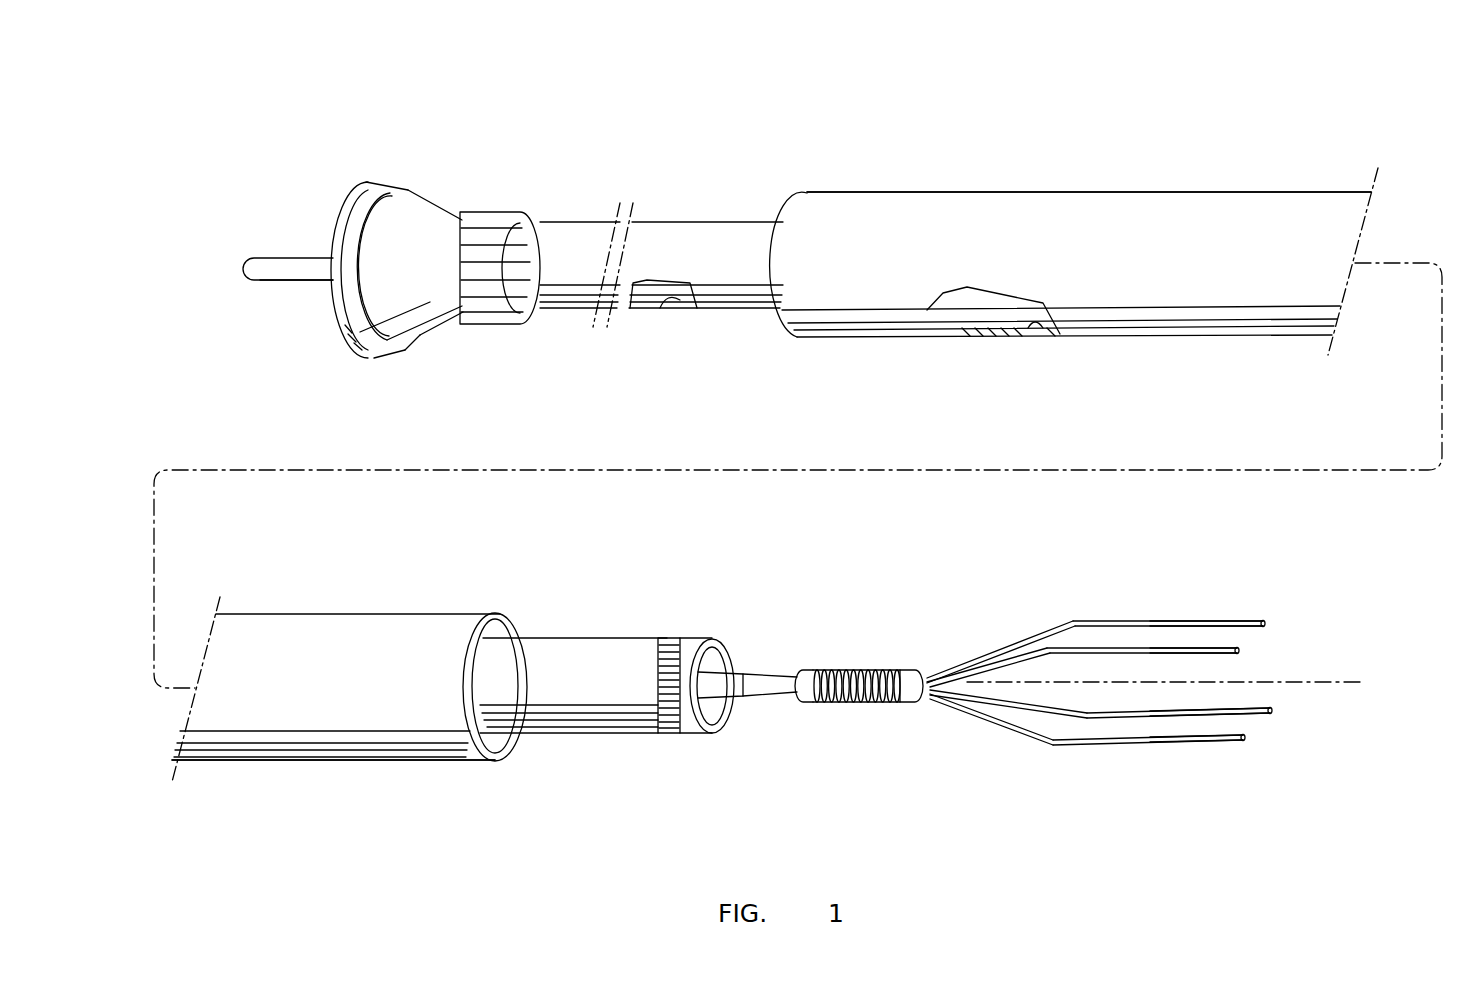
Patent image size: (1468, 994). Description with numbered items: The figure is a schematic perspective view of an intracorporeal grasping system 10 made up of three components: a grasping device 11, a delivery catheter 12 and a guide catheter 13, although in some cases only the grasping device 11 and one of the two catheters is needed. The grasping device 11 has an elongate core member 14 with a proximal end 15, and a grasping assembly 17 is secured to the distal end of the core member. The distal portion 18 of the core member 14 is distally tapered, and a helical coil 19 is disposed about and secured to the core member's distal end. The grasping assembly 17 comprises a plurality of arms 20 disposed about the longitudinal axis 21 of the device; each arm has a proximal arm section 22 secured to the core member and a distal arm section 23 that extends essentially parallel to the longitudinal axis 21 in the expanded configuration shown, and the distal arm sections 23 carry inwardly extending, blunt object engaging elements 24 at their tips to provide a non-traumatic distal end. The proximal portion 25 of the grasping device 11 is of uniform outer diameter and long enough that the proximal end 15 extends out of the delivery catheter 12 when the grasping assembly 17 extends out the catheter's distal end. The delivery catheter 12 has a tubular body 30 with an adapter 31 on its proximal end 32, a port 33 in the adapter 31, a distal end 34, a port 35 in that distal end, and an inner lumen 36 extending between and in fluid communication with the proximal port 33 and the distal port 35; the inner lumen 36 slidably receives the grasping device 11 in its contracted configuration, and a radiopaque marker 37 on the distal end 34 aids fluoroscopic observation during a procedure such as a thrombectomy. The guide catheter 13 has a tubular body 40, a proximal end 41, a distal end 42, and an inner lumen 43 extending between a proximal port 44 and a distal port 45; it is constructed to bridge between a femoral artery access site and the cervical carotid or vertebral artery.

The intracorporeal grasping system 10 is at (1297, 165).
The grasping device 11 is at (853, 616).
The delivery catheter 12 is at (968, 317).
The guide catheter 13 is at (1112, 191).
The elongate core member 14 is at (740, 673).
The proximal end 15 is at (243, 266).
The grasping assembly 17 is at (1016, 758).
The distal portion 18 is at (778, 672).
The helical coil 19 is at (887, 670).
The arms 20 is at (1108, 647).
The longitudinal axis 21 is at (1366, 681).
The proximal arm sections 22 is at (1030, 633).
The distal arm sections 23 is at (1203, 647).
The object engaging elements 24 is at (1267, 631).
The proximal portion 25 is at (308, 283).
The tubular body 30 is at (573, 638).
The adapter 31 is at (470, 217).
The proximal end 32 is at (563, 222).
The port 33 is at (347, 198).
The distal end 34 is at (717, 733).
The port 35 is at (713, 660).
The inner lumen 36 is at (665, 310).
The radiopaque marker 37 is at (680, 638).
The tubular body 40 is at (335, 761).
The proximal end 41 is at (870, 192).
The distal end 42 is at (433, 612).
The inner lumen 43 is at (1022, 337).
The proximal port 44 is at (788, 207).
The distal port 45 is at (497, 741).